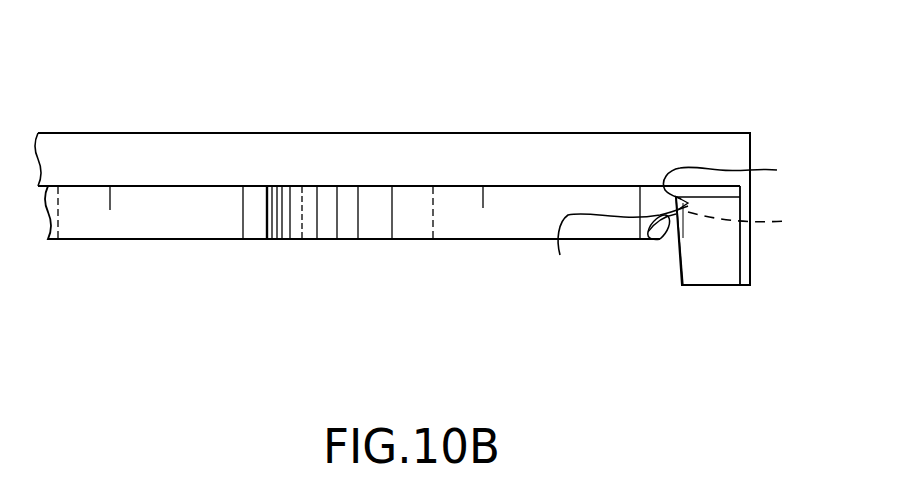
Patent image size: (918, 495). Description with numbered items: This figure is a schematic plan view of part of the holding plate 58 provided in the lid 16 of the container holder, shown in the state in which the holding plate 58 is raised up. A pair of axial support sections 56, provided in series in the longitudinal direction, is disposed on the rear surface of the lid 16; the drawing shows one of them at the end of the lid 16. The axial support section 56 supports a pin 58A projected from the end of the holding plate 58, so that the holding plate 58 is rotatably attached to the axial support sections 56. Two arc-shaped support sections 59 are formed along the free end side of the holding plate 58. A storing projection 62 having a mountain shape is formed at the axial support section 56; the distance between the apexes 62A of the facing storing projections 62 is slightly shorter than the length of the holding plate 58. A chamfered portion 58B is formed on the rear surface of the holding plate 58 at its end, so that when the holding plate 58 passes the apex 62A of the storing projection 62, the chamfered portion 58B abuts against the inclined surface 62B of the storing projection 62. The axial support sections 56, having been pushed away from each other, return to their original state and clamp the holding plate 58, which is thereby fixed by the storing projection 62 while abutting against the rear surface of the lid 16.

The lid 16 is at (500, 153).
The axial support section 56 is at (725, 273).
The holding plate 58 is at (522, 262).
The pin 58A is at (764, 222).
The chamfered portion 58B is at (611, 247).
The arc-shaped support section 59 is at (207, 222).
The storing projection 62 is at (669, 277).
The apex 62A is at (652, 232).
The inclined surface 62B is at (747, 182).